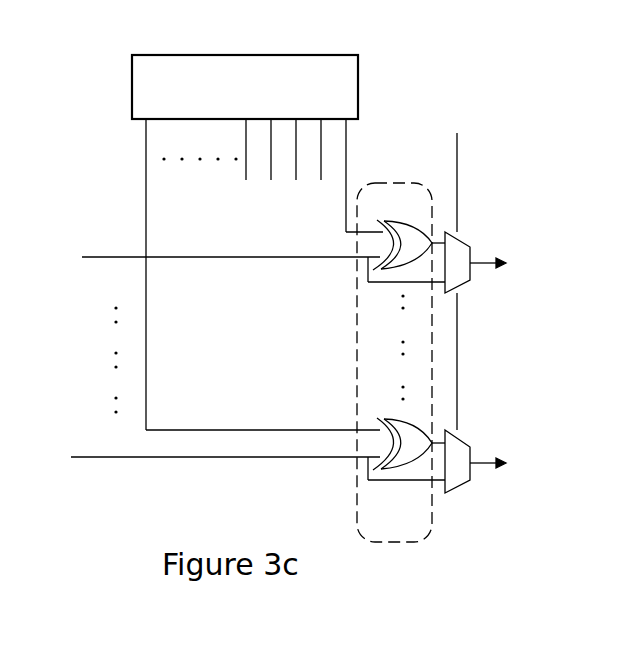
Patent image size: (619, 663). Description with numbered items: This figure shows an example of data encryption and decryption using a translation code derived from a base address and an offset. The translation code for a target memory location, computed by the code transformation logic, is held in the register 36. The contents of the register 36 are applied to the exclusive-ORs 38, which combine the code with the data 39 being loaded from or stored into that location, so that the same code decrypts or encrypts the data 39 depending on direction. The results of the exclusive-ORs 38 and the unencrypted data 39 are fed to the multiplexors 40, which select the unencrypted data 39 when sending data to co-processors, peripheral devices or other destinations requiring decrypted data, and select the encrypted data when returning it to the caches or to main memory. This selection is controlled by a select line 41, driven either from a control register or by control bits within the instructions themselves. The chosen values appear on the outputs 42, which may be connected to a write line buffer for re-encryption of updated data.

The translation code register 36 is at (358, 82).
The exclusive-ORs 38 is at (430, 207).
The data 39 is at (47, 327).
The multiplexors 40 is at (463, 288).
The select line 41 is at (457, 178).
The outputs 42 is at (500, 240).